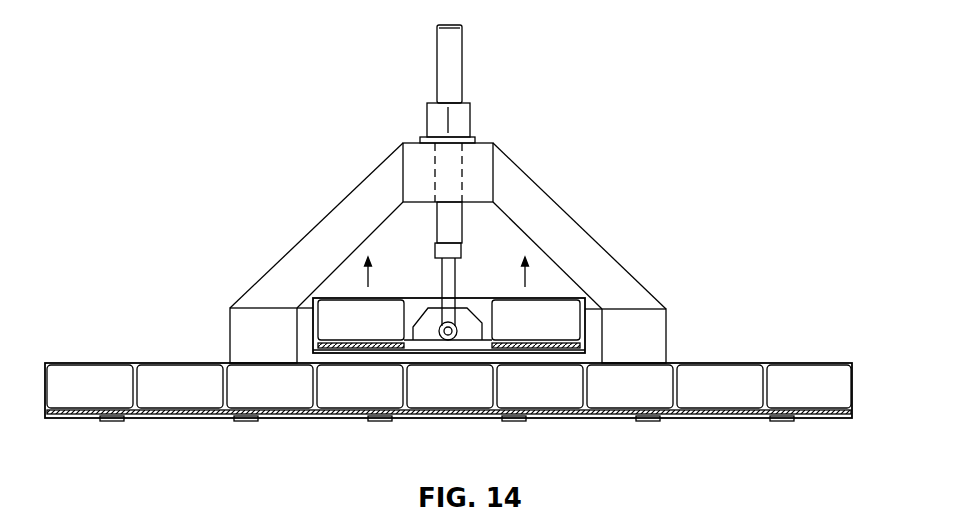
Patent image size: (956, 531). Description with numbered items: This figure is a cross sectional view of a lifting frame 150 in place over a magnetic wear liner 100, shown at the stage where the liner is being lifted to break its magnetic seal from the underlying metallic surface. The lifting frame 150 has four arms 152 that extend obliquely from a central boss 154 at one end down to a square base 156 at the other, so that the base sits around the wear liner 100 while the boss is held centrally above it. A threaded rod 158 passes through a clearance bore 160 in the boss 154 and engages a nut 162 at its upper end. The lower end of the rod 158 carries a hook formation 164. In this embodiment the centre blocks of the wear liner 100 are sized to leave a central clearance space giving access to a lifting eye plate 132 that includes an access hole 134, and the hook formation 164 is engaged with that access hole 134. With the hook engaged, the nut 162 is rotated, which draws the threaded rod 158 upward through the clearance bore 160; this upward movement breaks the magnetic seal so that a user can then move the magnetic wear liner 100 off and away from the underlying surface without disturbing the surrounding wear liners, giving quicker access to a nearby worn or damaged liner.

The magnetic wear liner 100 is at (348, 318).
The lifting eye plate 132 is at (467, 328).
The access hole 134 is at (457, 326).
The lifting frame 150 is at (411, 140).
The arms 152 is at (350, 213).
The central boss 154 is at (483, 152).
The square base 156 is at (635, 338).
The threaded rod 158 is at (442, 60).
The clearance bore 160 is at (445, 177).
The nut 162 is at (465, 113).
The hook formation 164 is at (450, 337).